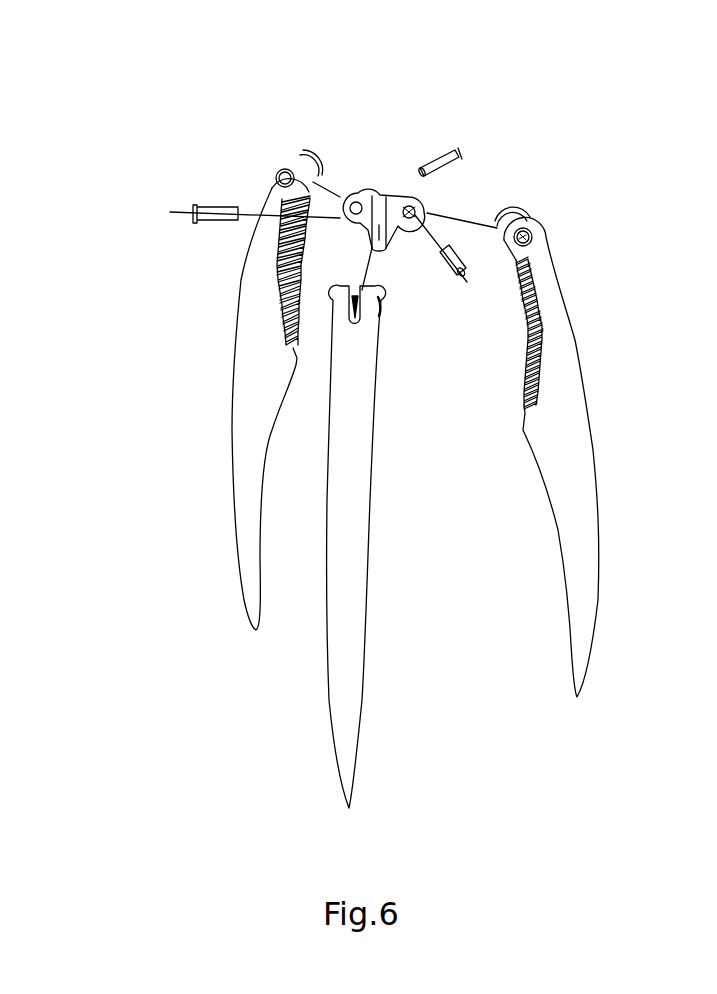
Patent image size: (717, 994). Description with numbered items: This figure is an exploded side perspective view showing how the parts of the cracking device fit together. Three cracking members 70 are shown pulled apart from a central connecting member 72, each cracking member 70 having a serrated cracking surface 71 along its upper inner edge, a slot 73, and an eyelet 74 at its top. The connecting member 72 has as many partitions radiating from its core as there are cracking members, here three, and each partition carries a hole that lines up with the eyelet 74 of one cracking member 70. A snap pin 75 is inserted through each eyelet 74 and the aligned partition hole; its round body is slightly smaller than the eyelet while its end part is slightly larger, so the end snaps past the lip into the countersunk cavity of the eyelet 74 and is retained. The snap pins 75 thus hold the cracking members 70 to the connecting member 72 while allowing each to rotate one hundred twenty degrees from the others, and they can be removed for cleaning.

The cracking member 70 is at (555, 433).
The serrated cracking surface 71 is at (527, 345).
The connecting member 72 is at (414, 211).
The slot 73 is at (352, 315).
The eyelet 74 is at (530, 234).
The snap pin 75 is at (420, 168).